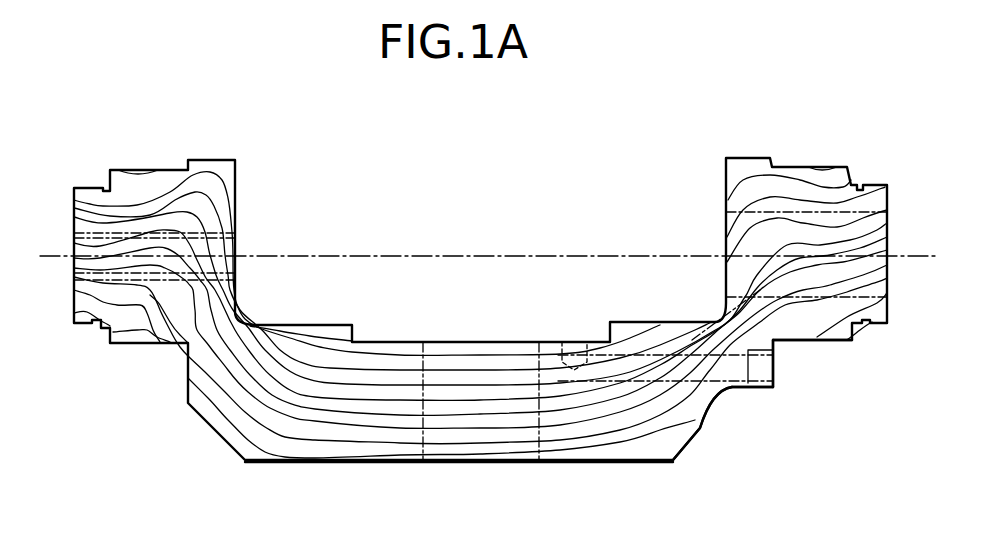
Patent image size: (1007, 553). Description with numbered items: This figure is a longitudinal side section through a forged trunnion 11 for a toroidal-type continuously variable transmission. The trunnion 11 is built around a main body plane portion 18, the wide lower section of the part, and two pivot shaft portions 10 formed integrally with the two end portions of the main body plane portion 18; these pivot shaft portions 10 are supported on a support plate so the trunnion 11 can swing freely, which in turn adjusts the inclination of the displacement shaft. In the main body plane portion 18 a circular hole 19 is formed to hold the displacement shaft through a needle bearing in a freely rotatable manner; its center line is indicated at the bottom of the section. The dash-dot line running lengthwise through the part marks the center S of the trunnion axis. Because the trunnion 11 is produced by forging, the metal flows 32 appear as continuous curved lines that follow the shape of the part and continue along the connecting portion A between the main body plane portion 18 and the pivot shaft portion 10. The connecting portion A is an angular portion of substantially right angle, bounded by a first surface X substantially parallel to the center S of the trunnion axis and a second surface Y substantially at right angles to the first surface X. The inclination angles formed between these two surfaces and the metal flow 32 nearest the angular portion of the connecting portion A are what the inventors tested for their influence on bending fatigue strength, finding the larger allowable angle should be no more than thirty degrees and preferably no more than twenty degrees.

The pivot shaft portion 10 is at (138, 170).
The trunnion 11 is at (252, 186).
The center of the trunnion axis S is at (457, 255).
The first surface X is at (827, 343).
The connecting portion A is at (790, 360).
The second surface Y is at (786, 378).
The metal flows 32 is at (670, 403).
The main body plane portion 18 is at (620, 462).
The circular hole 19 is at (432, 460).